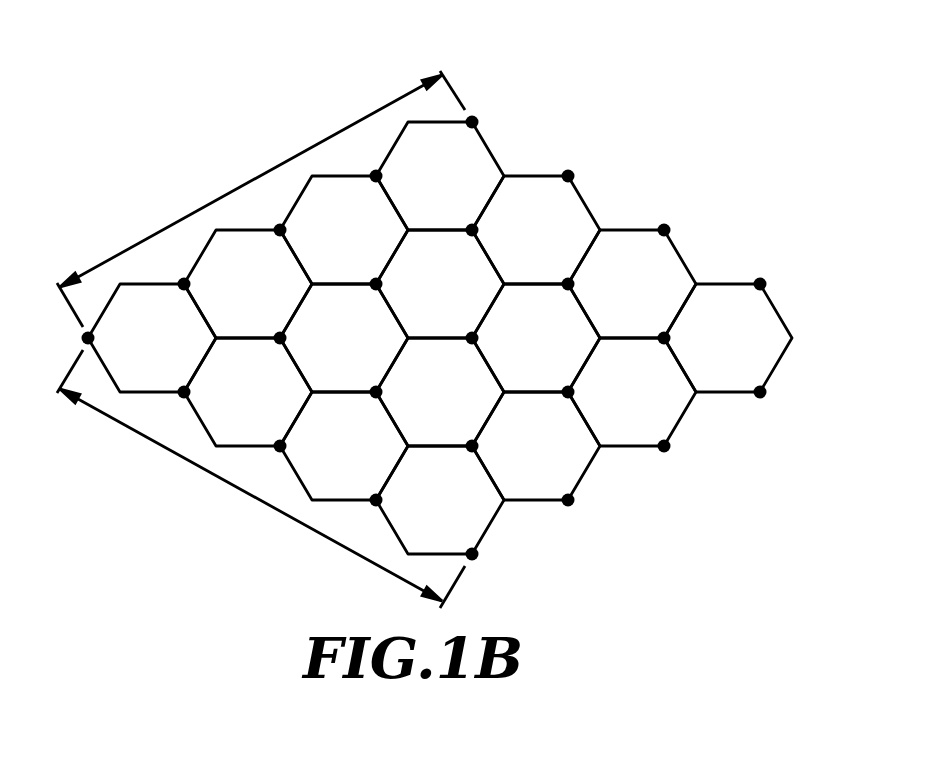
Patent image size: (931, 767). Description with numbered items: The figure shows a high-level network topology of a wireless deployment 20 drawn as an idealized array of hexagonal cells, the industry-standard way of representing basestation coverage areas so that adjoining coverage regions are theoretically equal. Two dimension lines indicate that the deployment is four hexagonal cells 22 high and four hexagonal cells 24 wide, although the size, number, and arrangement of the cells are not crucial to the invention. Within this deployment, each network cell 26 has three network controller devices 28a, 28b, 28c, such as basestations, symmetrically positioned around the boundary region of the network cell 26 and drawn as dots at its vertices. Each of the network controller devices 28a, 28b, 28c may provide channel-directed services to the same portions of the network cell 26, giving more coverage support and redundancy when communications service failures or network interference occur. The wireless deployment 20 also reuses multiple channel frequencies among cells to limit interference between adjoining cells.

The wireless deployment 20 is at (441, 329).
The hexagonal cells high 22 is at (250, 181).
The hexagonal cells wide 24 is at (250, 495).
The network cell 26 is at (790, 334).
The network controller device 28a is at (668, 339).
The network controller device 28b is at (764, 283).
The network controller device 28c is at (764, 392).